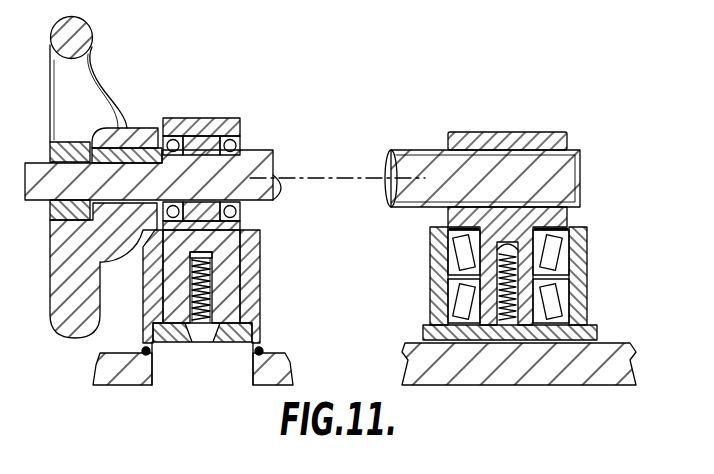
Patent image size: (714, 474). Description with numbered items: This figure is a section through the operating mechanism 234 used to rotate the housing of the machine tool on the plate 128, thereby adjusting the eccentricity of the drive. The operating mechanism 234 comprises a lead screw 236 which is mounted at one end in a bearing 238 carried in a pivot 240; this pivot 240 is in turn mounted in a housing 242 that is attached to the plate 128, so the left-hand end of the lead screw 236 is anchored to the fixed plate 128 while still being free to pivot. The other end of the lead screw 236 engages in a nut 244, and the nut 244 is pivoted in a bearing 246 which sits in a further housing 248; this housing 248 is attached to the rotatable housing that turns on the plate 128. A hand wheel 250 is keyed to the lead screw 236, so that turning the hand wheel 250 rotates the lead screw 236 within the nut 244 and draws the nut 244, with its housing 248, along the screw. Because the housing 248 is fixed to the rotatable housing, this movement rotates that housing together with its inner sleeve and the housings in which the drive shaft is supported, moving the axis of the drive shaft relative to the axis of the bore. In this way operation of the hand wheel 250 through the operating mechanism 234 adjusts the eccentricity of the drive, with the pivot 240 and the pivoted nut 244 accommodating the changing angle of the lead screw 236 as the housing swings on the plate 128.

The hand wheel 250 is at (80, 38).
The pivot 240 is at (214, 118).
The operating mechanism 234 is at (298, 130).
The nut 244 is at (497, 140).
The lead screw 236 is at (567, 168).
The bearing 238 is at (252, 214).
The housing 242 is at (252, 297).
The housing 248 is at (578, 254).
The bearing 246 is at (553, 300).
The plate 128 is at (122, 365).